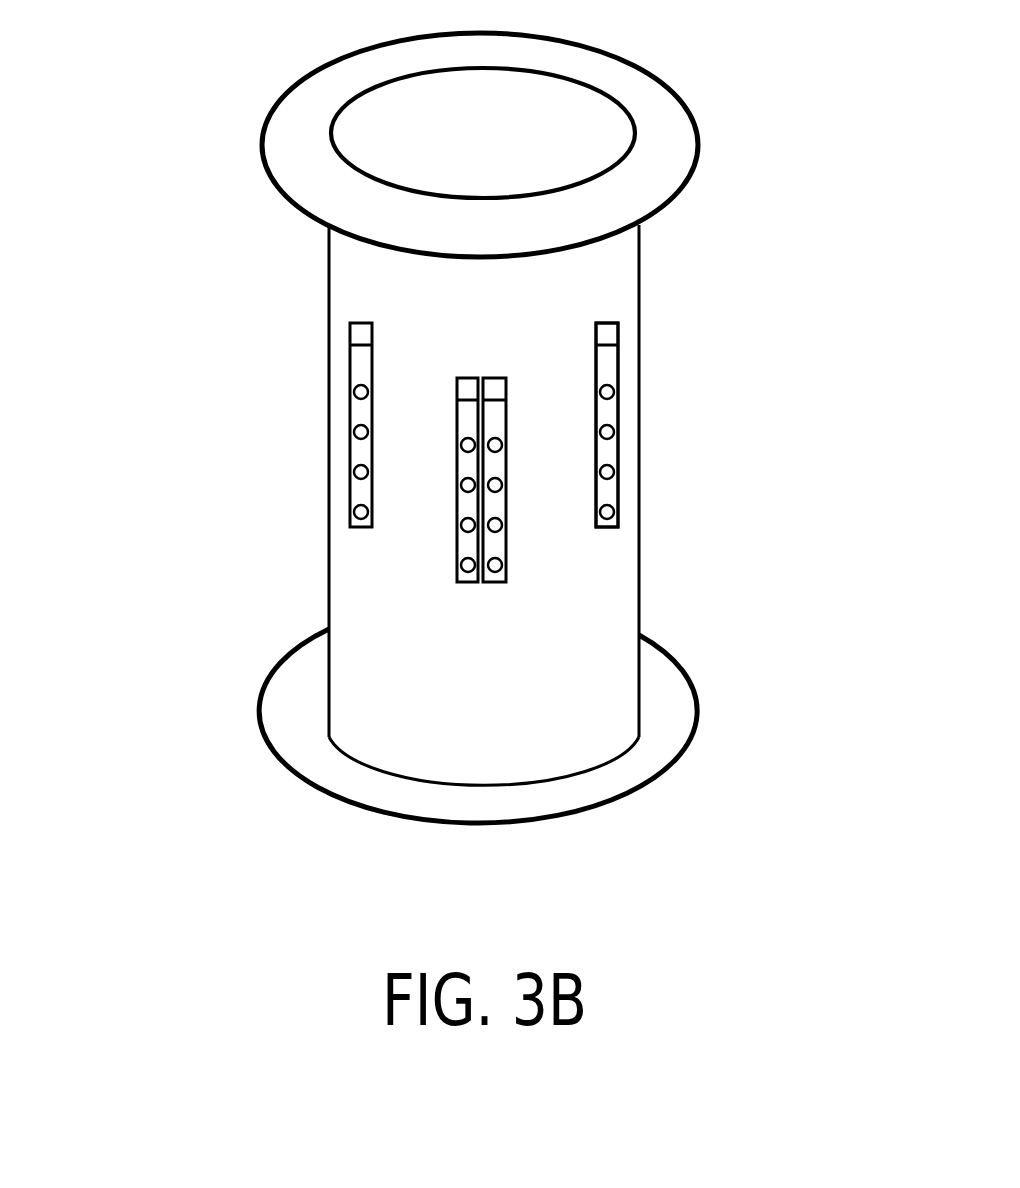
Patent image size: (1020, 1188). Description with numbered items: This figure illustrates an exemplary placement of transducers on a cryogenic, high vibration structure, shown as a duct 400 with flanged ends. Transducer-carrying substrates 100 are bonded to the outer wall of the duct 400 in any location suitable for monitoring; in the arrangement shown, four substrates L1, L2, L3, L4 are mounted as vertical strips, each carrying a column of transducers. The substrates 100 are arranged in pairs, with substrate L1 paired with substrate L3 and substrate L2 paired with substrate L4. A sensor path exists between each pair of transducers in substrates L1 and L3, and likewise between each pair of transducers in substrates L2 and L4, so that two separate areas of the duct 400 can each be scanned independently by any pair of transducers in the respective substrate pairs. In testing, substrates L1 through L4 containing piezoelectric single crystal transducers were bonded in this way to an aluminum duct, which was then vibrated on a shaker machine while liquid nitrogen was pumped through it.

The substrate 100 is at (622, 420).
The cylindrical container 400 is at (337, 648).
The substrate L1 is at (459, 517).
The substrate L2 is at (607, 457).
The substrate L3 is at (362, 457).
The substrate L4 is at (517, 517).